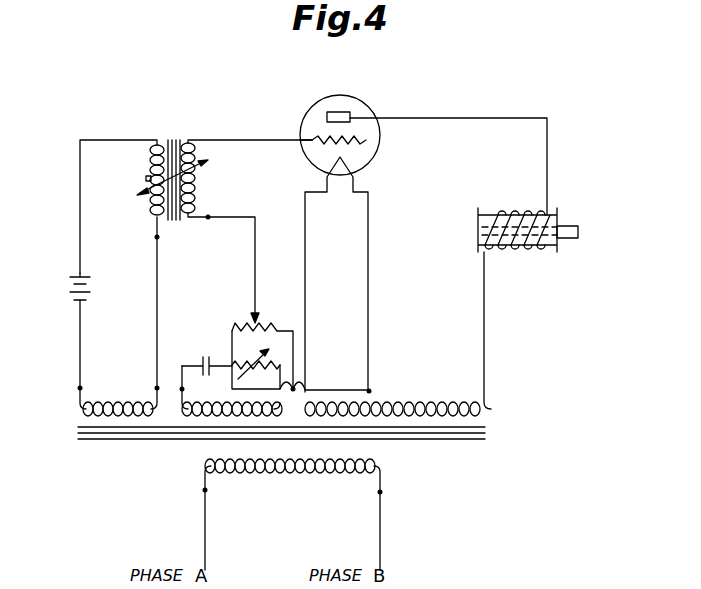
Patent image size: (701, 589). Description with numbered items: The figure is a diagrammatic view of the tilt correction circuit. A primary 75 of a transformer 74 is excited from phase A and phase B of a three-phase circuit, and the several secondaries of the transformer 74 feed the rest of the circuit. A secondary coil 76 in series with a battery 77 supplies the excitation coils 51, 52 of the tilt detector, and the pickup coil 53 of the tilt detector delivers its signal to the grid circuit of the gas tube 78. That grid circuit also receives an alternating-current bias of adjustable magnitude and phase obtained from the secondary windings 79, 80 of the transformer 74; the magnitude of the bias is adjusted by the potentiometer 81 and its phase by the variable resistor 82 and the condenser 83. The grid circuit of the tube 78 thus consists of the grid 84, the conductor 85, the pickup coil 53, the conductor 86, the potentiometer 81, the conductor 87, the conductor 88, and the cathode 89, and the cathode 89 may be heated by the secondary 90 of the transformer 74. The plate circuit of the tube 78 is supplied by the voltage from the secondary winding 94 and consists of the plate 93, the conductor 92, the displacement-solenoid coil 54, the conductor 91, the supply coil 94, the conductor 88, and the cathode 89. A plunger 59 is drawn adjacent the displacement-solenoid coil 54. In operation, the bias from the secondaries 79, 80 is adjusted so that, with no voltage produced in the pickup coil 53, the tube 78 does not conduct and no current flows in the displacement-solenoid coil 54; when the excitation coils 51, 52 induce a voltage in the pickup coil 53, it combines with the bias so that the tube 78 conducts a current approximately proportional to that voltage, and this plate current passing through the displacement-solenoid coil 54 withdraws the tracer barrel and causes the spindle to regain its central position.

The excitation coil 51 is at (150, 152).
The excitation coil 52 is at (150, 205).
The pickup coil 53 is at (198, 181).
The displacement-solenoid coil 54 is at (513, 255).
The plunger 59 is at (575, 229).
The transformer 74 is at (108, 432).
The primary 75 is at (302, 473).
The secondary coil 76 is at (126, 401).
The battery 77 is at (70, 287).
The gas tube 78 is at (317, 109).
The secondary winding 79 is at (203, 402).
The secondary winding 80 is at (250, 401).
The potentiometer 81 is at (250, 321).
The variable resistor 82 is at (256, 360).
The condenser 83 is at (205, 355).
The grid 84 is at (306, 138).
The conductor 85 is at (216, 139).
The conductor 86 is at (232, 217).
The conductor 87 is at (292, 403).
The conductor 88 is at (371, 295).
The cathode 89 is at (352, 158).
The secondary 90 is at (338, 401).
The conductor 91 is at (486, 362).
The conductor 92 is at (463, 118).
The plate 93 is at (346, 112).
The secondary winding 94 is at (404, 401).